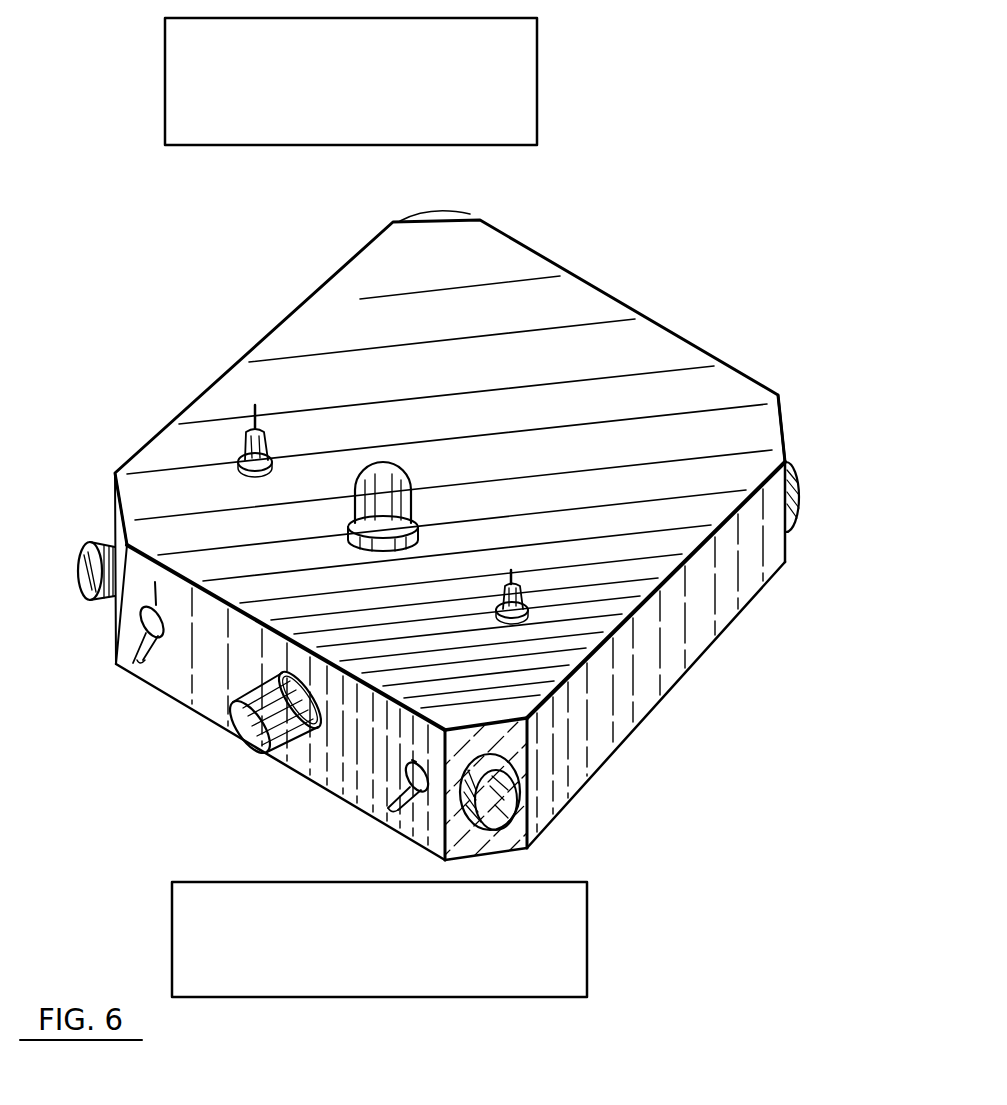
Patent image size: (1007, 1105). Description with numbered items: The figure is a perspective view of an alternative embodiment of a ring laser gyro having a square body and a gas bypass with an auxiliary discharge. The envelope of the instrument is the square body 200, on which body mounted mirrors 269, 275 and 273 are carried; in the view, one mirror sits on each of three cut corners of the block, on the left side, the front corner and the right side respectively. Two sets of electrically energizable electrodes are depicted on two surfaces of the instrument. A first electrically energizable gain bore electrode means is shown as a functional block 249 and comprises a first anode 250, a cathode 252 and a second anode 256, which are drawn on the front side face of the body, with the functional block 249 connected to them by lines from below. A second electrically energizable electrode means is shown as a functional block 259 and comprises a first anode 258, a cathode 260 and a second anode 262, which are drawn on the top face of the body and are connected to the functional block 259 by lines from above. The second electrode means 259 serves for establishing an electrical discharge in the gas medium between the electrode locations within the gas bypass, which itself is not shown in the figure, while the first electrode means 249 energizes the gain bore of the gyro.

The square body 200 is at (614, 292).
The first electrically energizable gain bore electrode means 249 is at (155, 640).
The first anode 250 is at (140, 632).
The cathode 252 is at (238, 720).
The second anode 256 is at (392, 792).
The first anode 258 is at (260, 432).
The second electrically energizable electrode means 259 is at (527, 578).
The cathode 260 is at (382, 492).
The second anode 262 is at (503, 598).
The body mounted mirror 269 is at (82, 566).
The body mounted mirror 273 is at (855, 498).
The body mounted mirror 275 is at (525, 835).